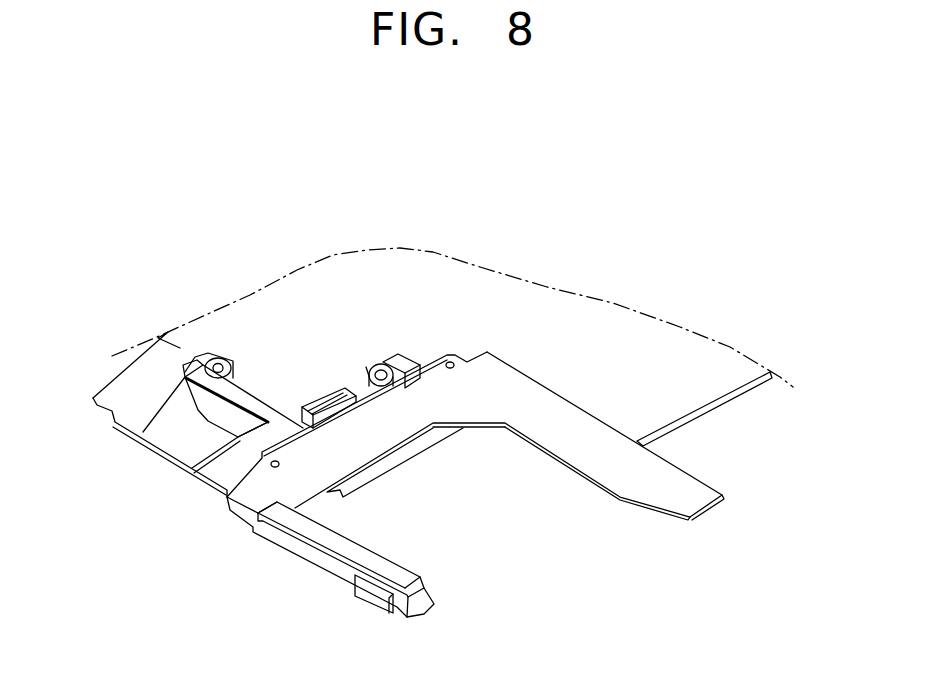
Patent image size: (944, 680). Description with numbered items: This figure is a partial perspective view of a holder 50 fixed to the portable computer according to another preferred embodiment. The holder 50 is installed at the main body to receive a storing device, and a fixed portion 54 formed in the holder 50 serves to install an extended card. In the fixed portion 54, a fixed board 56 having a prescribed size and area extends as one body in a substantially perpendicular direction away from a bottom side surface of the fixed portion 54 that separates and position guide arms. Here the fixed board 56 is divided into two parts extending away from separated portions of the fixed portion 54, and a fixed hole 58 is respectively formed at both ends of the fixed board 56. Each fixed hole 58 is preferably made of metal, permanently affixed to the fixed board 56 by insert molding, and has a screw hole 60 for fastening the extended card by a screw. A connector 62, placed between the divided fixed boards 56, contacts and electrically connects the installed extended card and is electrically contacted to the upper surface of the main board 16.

The main board 16 is at (690, 383).
The holder 50 is at (597, 465).
The fixed portion 54 is at (264, 396).
The fixed board 56 is at (225, 427).
The fixed hole 58 is at (182, 365).
The screw hole 60 is at (183, 374).
The connector 62 is at (325, 400).